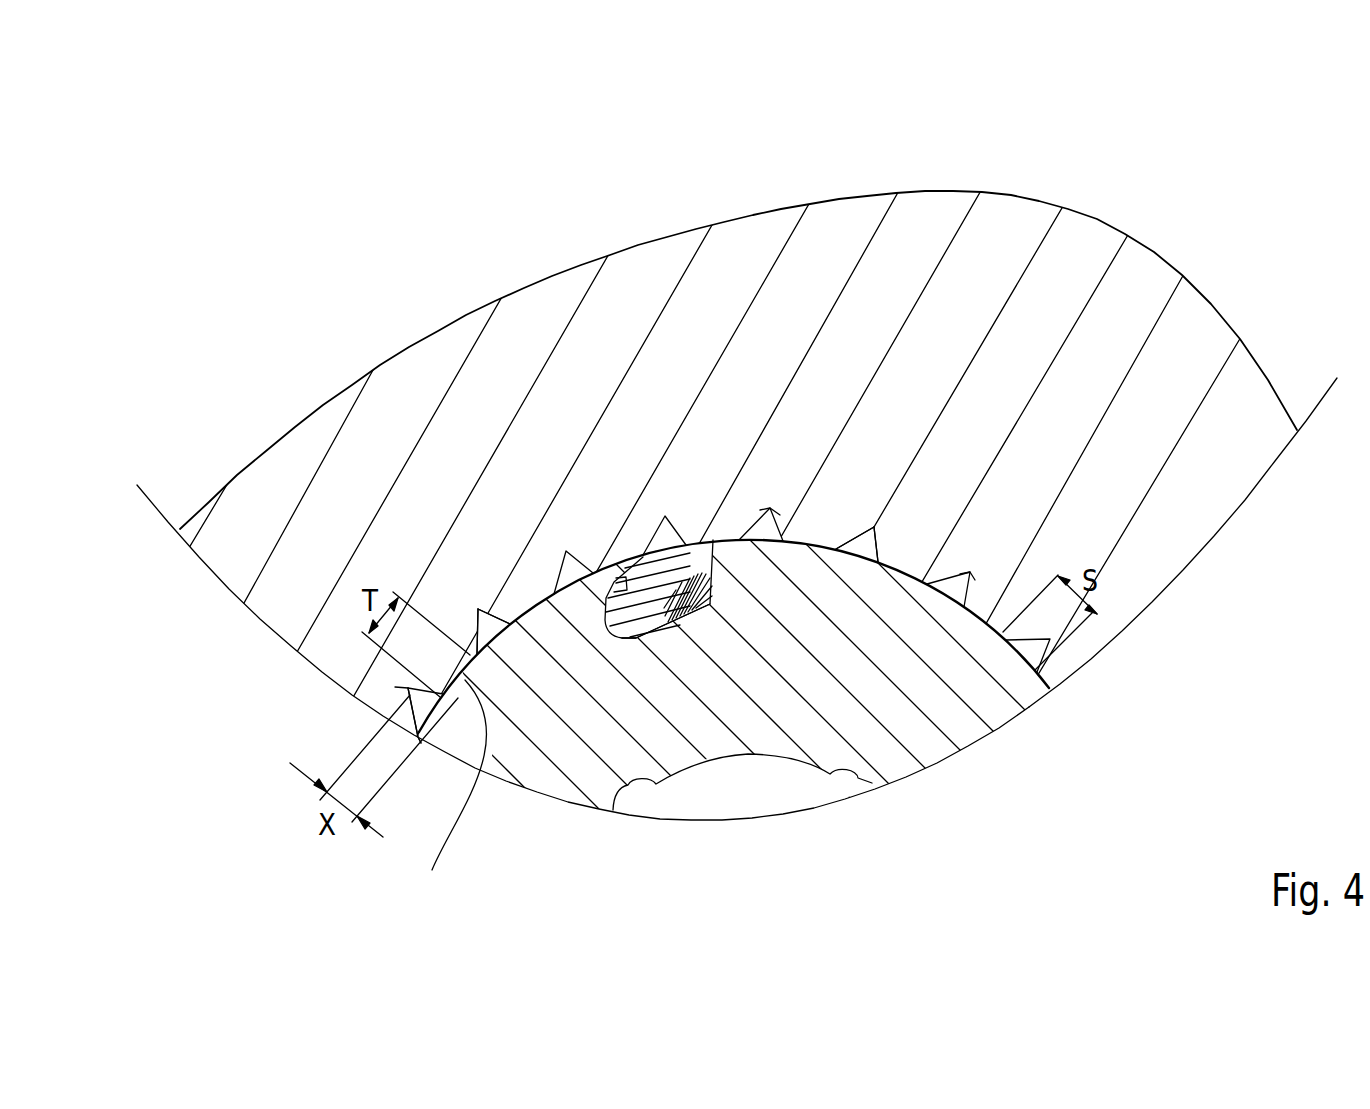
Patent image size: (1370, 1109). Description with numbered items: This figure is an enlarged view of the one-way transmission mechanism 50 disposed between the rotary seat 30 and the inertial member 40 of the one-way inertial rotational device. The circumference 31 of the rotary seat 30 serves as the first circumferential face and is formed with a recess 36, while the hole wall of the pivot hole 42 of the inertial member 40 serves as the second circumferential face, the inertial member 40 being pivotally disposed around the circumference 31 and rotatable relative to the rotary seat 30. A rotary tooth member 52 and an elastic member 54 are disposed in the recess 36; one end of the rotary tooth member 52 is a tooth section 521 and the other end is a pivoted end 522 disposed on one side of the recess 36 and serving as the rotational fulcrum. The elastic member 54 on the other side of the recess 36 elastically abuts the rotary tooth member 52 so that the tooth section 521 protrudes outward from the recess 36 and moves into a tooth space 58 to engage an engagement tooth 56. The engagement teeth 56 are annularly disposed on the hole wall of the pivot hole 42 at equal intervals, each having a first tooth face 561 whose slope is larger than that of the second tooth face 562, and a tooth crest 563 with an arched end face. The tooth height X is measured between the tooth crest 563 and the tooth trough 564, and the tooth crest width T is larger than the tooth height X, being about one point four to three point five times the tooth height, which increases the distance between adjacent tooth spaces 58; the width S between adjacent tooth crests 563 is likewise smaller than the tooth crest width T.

The rotary seat 30 is at (531, 745).
The circumference 31 is at (968, 752).
The recess 36 is at (648, 643).
The inertial member 40 is at (1119, 325).
The pivot hole 42 is at (990, 607).
The one-way transmission mechanism 50 is at (613, 527).
The rotary tooth member 52 is at (530, 613).
The tooth section 521 is at (640, 587).
The pivoted end 522 is at (612, 637).
The elastic member 54 is at (877, 777).
The engagement tooth 56 is at (516, 614).
The first tooth face 561 is at (510, 606).
The second tooth face 562 is at (495, 600).
The tooth crest 563 is at (446, 790).
The tooth trough 564 is at (410, 690).
The tooth space 58 is at (762, 527).